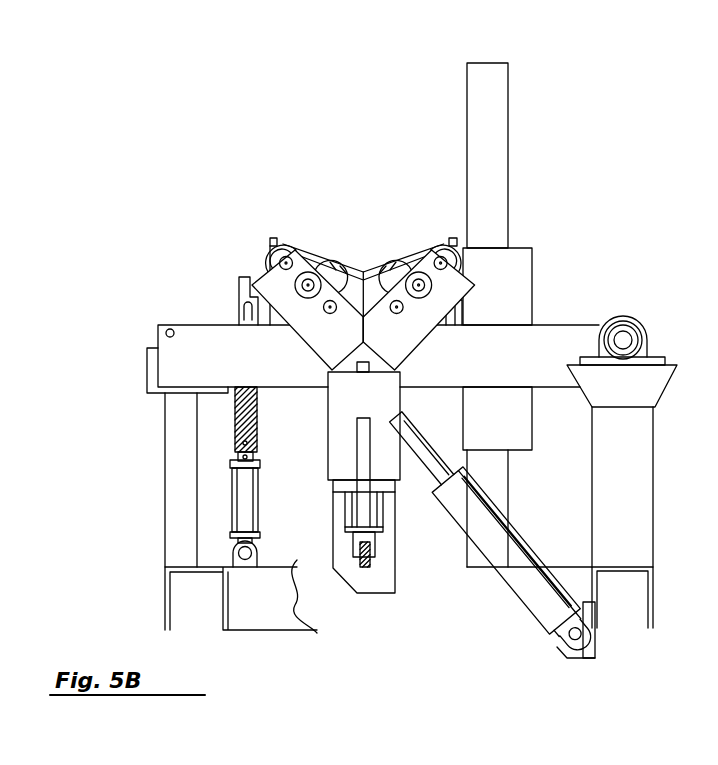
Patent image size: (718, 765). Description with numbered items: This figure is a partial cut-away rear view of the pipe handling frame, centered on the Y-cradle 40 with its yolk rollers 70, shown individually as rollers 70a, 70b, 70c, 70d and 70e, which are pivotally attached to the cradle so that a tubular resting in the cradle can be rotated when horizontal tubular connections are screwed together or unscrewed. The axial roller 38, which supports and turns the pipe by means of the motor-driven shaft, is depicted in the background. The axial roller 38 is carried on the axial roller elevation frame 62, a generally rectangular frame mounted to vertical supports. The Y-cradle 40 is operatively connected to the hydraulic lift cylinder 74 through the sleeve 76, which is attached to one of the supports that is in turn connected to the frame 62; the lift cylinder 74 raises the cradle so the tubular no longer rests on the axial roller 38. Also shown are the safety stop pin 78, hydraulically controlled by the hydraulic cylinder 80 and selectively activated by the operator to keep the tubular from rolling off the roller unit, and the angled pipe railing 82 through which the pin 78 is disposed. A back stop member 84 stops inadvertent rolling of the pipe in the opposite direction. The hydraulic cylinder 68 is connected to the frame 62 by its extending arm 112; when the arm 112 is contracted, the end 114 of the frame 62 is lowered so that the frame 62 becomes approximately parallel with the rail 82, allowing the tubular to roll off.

The axial roller 38 is at (375, 260).
The Y-cradle 40 is at (453, 293).
The axial roller elevation frame 62 is at (203, 335).
The hydraulic cylinder means 68 is at (533, 592).
The yolk rollers 70 is at (388, 260).
The yolk roller 70a is at (428, 240).
The yolk roller 70b is at (408, 260).
The yolk roller 70c is at (285, 237).
The yolk roller 70d is at (320, 260).
The yolk roller 70e is at (345, 260).
The hydraulic lift cylinder 74 is at (360, 503).
The sleeve 76 is at (343, 412).
The safety stop pin 78 is at (238, 427).
The hydraulic cylinder 80 is at (243, 507).
The pipe railing 82 is at (155, 372).
The back stop member 84 is at (495, 93).
The extending arm 112 is at (432, 465).
The end of the axial roller frame 114 is at (168, 332).